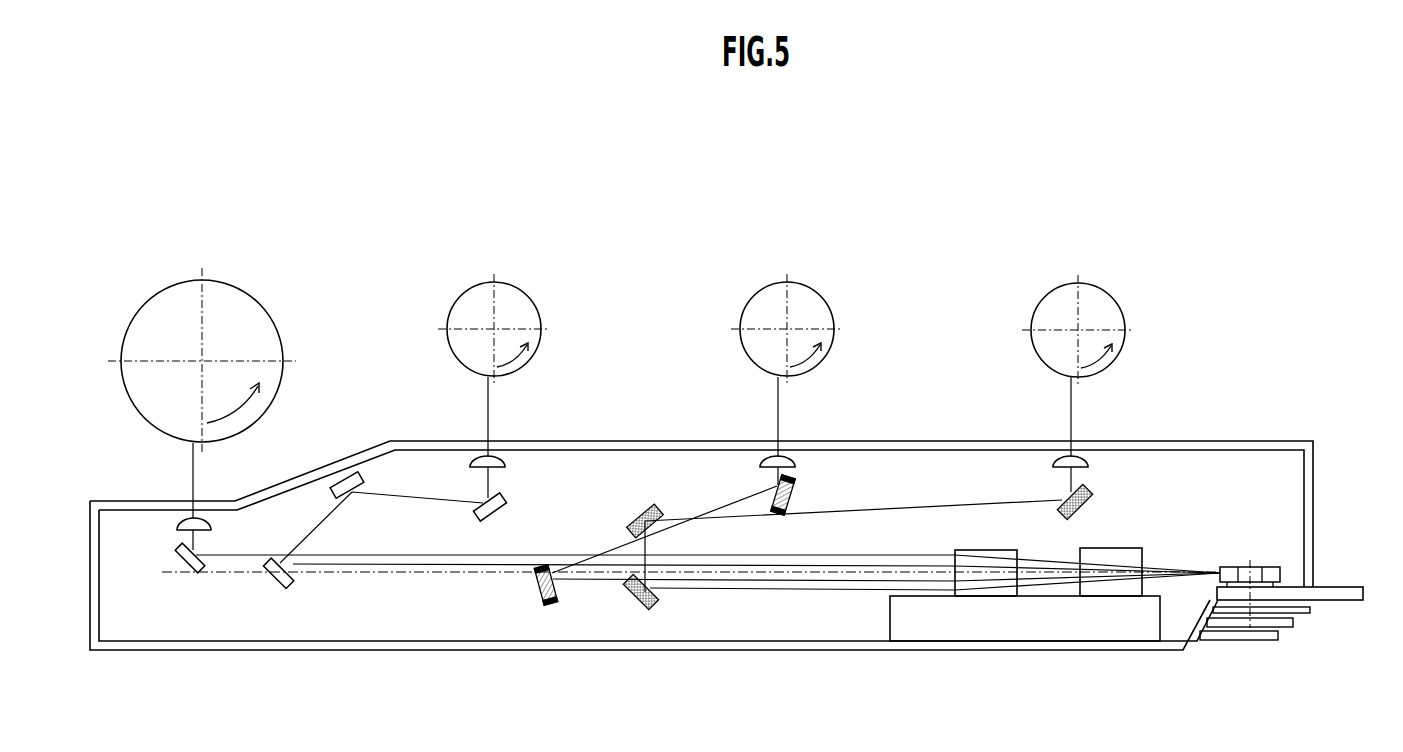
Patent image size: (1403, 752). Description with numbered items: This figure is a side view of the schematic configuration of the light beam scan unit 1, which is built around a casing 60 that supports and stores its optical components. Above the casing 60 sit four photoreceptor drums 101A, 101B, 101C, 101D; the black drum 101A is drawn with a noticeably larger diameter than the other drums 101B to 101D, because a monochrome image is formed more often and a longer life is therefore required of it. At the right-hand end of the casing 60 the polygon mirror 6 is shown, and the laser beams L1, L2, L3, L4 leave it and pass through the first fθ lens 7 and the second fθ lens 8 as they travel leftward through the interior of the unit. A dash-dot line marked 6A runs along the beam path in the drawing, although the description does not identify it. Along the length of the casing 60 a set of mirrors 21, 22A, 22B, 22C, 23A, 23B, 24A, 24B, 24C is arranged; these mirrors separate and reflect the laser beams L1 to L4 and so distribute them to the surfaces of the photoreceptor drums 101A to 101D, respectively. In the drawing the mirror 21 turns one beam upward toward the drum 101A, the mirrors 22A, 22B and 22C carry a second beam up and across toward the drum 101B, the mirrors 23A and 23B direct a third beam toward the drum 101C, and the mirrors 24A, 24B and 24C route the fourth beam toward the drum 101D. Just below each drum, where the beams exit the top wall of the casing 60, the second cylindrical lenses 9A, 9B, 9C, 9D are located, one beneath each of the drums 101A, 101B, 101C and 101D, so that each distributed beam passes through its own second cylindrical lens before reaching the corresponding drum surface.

The light beam scan unit 1 is at (1320, 404).
The casing 60 is at (373, 651).
The photoreceptor drum 101A is at (263, 301).
The photoreceptor drum 101B is at (529, 292).
The photoreceptor drum 101C is at (821, 292).
The photoreceptor drum 101D is at (1110, 293).
The second cylindrical lens 9A is at (181, 516).
The second cylindrical lens 9B is at (471, 459).
The second cylindrical lens 9C is at (762, 459).
The second cylindrical lens 9D is at (1055, 459).
The mirror 21 is at (180, 551).
The mirror 22A is at (296, 583).
The mirror 22B is at (336, 496).
The mirror 22C is at (504, 501).
The mirror 23A is at (556, 598).
The mirror 23B is at (794, 495).
The mirror 24A is at (655, 603).
The mirror 24B is at (631, 525).
The mirror 24C is at (1090, 500).
The optical axis 6A is at (370, 574).
The laser beam L1 is at (872, 557).
The laser beam L2 is at (898, 568).
The laser beam L3 is at (738, 588).
The laser beam L4 is at (788, 592).
The second fθ lens 8 is at (1017, 551).
The first fθ lens 7 is at (1142, 549).
The polygon mirror 6 is at (1270, 565).